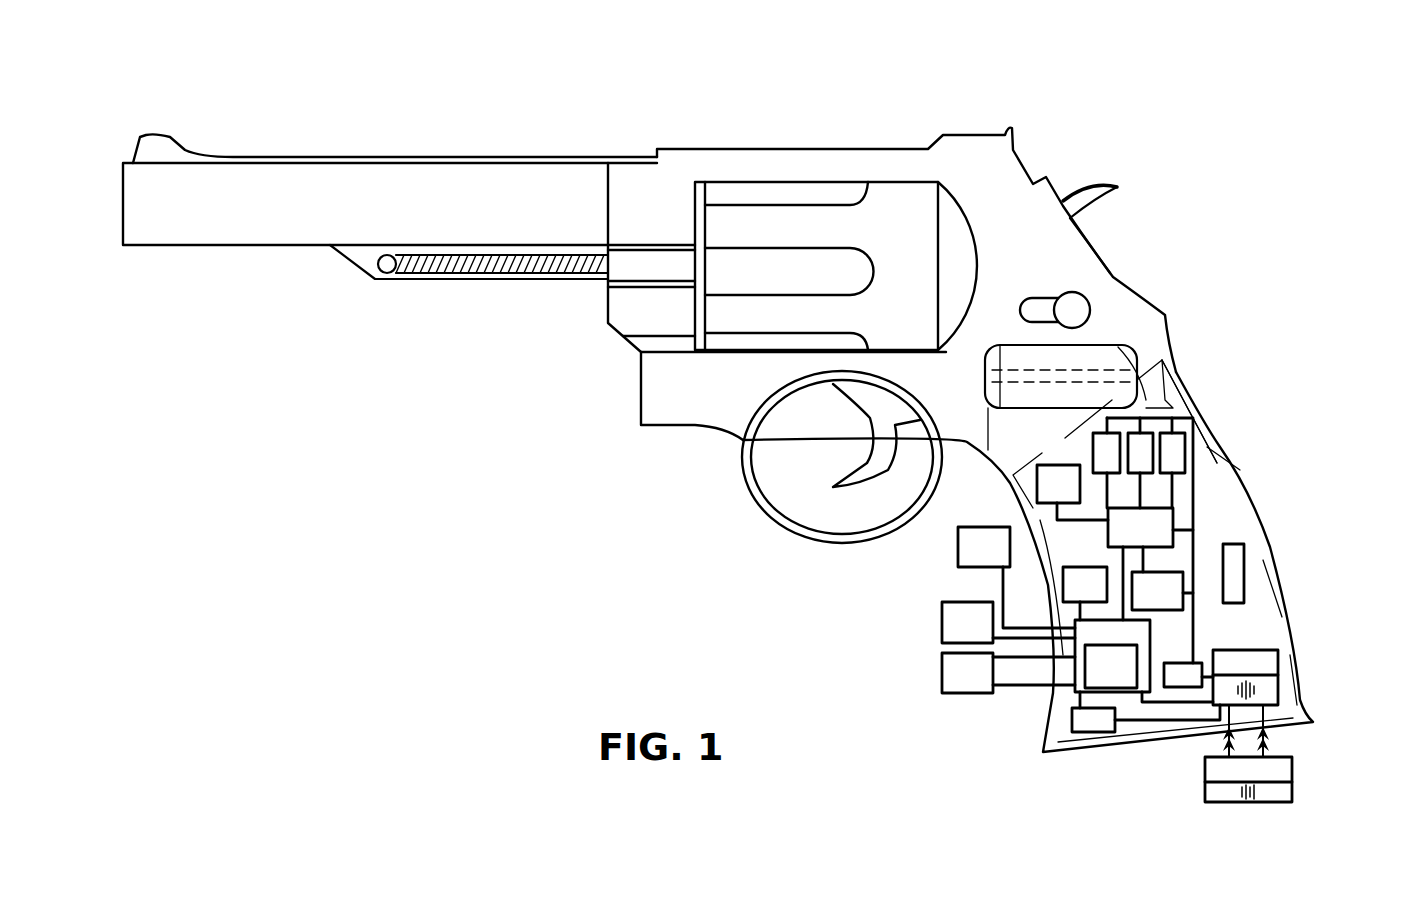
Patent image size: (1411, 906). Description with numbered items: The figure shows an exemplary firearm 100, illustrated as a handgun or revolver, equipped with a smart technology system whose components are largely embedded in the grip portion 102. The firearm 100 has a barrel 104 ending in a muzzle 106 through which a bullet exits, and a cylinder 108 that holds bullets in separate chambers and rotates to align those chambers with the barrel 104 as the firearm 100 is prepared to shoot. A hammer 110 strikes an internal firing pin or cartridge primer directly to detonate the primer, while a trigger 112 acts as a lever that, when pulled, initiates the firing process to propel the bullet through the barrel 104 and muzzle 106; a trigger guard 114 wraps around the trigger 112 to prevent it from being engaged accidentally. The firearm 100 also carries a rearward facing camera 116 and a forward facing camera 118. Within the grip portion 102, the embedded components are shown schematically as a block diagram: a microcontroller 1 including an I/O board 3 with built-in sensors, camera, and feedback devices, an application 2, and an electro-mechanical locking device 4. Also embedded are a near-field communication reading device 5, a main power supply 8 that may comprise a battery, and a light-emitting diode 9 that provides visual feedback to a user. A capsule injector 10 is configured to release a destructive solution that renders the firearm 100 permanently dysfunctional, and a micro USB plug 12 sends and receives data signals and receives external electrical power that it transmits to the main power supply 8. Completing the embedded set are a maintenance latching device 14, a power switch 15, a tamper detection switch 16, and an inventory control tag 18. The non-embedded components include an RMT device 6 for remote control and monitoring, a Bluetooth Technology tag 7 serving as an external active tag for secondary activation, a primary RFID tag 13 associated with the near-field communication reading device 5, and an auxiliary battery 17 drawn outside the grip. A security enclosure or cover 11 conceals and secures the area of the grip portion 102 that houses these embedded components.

The firearm 100 is at (1224, 84).
The grip portion 102 is at (1285, 372).
The barrel 104 is at (448, 158).
The muzzle 106 is at (121, 224).
The cylinder 108 is at (795, 182).
The hammer 110 is at (1100, 186).
The trigger 112 is at (860, 467).
The trigger guard 114 is at (790, 532).
The rearward facing camera 116 is at (1165, 373).
The forward facing camera 118 is at (985, 377).
The security enclosure or cover 11 is at (1207, 447).
The microcontroller 1 is at (1144, 664).
The application 2 is at (1111, 666).
The I/O board 3 is at (1150, 564).
The electro-mechanical locking device 4 is at (1106, 463).
The near-field communication reading device 5 is at (1162, 591).
The RMT device 6 is at (1008, 673).
The Bluetooth Technology tag 7 is at (1016, 577).
The main power supply 8 is at (1245, 677).
The light-emitting diode 9 is at (1085, 593).
The capsule injector 10 is at (1140, 463).
The micro USB plug 12 is at (1146, 718).
The primary RFID tag 13 is at (1008, 622).
The maintenance latching device 14 is at (1172, 463).
The power switch 15 is at (1188, 675).
The tamper detection switch 16 is at (1072, 492).
The auxiliary battery 17 is at (1248, 753).
The inventory control tag 18 is at (1233, 573).